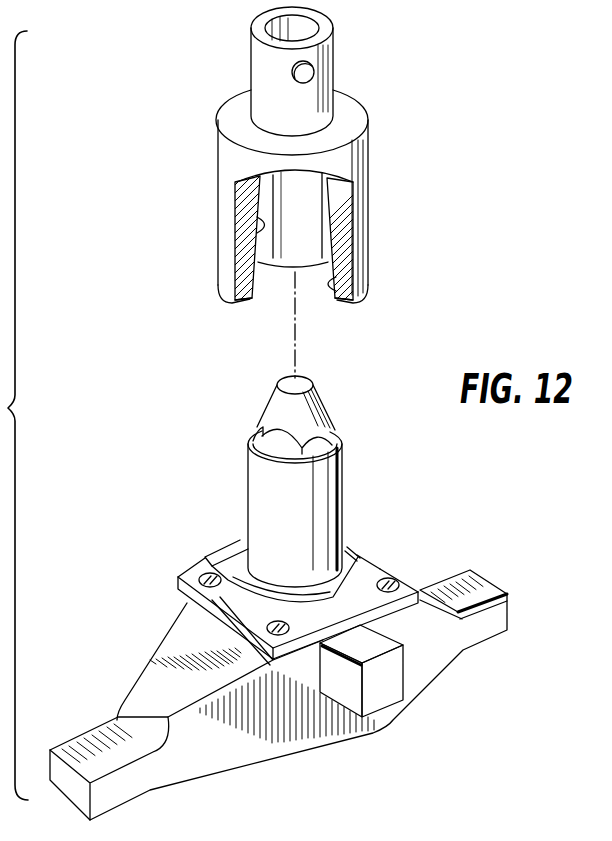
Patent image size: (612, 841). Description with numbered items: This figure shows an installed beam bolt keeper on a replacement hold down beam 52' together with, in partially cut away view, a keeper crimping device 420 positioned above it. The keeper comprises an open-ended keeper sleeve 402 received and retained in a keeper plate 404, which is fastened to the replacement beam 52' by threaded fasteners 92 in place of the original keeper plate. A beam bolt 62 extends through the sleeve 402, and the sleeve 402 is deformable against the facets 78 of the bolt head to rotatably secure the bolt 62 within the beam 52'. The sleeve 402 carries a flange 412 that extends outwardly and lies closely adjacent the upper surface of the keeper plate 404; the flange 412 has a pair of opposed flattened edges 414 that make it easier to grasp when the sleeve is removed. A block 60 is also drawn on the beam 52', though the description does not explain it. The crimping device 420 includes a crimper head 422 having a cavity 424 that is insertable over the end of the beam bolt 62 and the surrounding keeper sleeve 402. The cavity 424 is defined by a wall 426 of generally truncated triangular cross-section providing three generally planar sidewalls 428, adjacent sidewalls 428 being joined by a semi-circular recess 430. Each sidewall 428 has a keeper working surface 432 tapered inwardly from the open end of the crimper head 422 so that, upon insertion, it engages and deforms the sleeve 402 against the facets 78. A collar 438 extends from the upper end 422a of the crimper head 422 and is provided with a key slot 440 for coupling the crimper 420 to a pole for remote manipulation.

The keeper crimping device 420 is at (200, 121).
The collar 438 is at (252, 42).
The key slot 440 is at (313, 70).
The crimper head 422 is at (369, 162).
The upper end of the crimper head 422a is at (352, 111).
The wall 426 is at (285, 205).
The sidewalls 428 is at (264, 228).
The semi-circular recess 430 is at (304, 230).
The keeper working surface 432 is at (369, 279).
The cavity 424 is at (323, 300).
The replacement hold down beam 52' is at (278, 598).
The beam bolt 62 is at (326, 411).
The facets 78 is at (323, 444).
The keeper sleeve 402 is at (341, 507).
The flange 412 is at (351, 552).
The flattened edges 414 is at (394, 561).
The keeper plate 404 is at (187, 603).
The threaded fasteners 92 is at (201, 567).
The stop block 60 is at (389, 678).